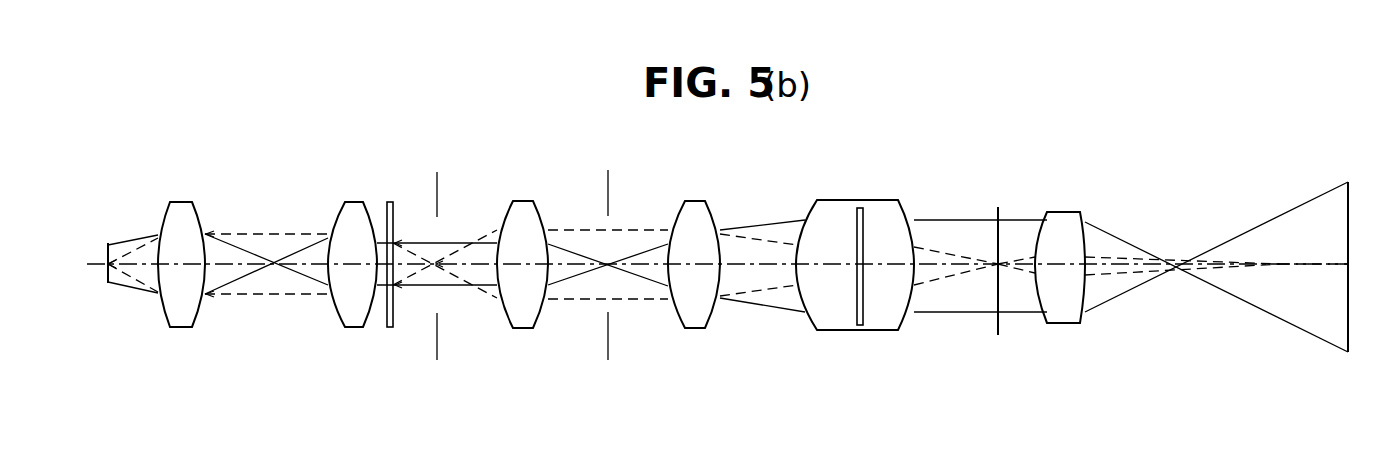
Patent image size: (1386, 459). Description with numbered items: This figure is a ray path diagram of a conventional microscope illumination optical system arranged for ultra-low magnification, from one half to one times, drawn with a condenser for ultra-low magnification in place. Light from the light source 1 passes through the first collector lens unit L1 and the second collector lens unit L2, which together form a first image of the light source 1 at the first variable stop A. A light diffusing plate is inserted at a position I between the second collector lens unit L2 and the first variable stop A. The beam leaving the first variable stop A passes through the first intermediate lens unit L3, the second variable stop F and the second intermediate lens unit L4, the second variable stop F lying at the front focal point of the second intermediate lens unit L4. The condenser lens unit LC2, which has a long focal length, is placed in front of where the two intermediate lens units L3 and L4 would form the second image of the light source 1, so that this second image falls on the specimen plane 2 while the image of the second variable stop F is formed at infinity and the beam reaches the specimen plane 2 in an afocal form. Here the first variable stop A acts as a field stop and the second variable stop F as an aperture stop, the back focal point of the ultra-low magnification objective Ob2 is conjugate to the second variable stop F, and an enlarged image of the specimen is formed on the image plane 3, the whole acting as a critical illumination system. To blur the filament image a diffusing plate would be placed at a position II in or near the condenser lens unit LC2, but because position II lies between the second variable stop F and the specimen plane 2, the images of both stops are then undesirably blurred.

The light source 1 is at (107, 258).
The specimen plane 2 is at (998, 213).
The image plane 3 is at (1348, 203).
The first collector lens unit L1 is at (179, 237).
The second collector lens unit L2 is at (352, 237).
The first intermediate lens unit L3 is at (522, 234).
The second intermediate lens unit L4 is at (694, 234).
The condenser lens unit for ultra-low magnification LC2 is at (855, 257).
The ultra-low magnification objective Ob2 is at (1070, 242).
The first variable stop A is at (425, 247).
The second variable stop F is at (607, 247).
The light diffusing plate position I is at (388, 287).
The light diffusing plate position II is at (858, 291).